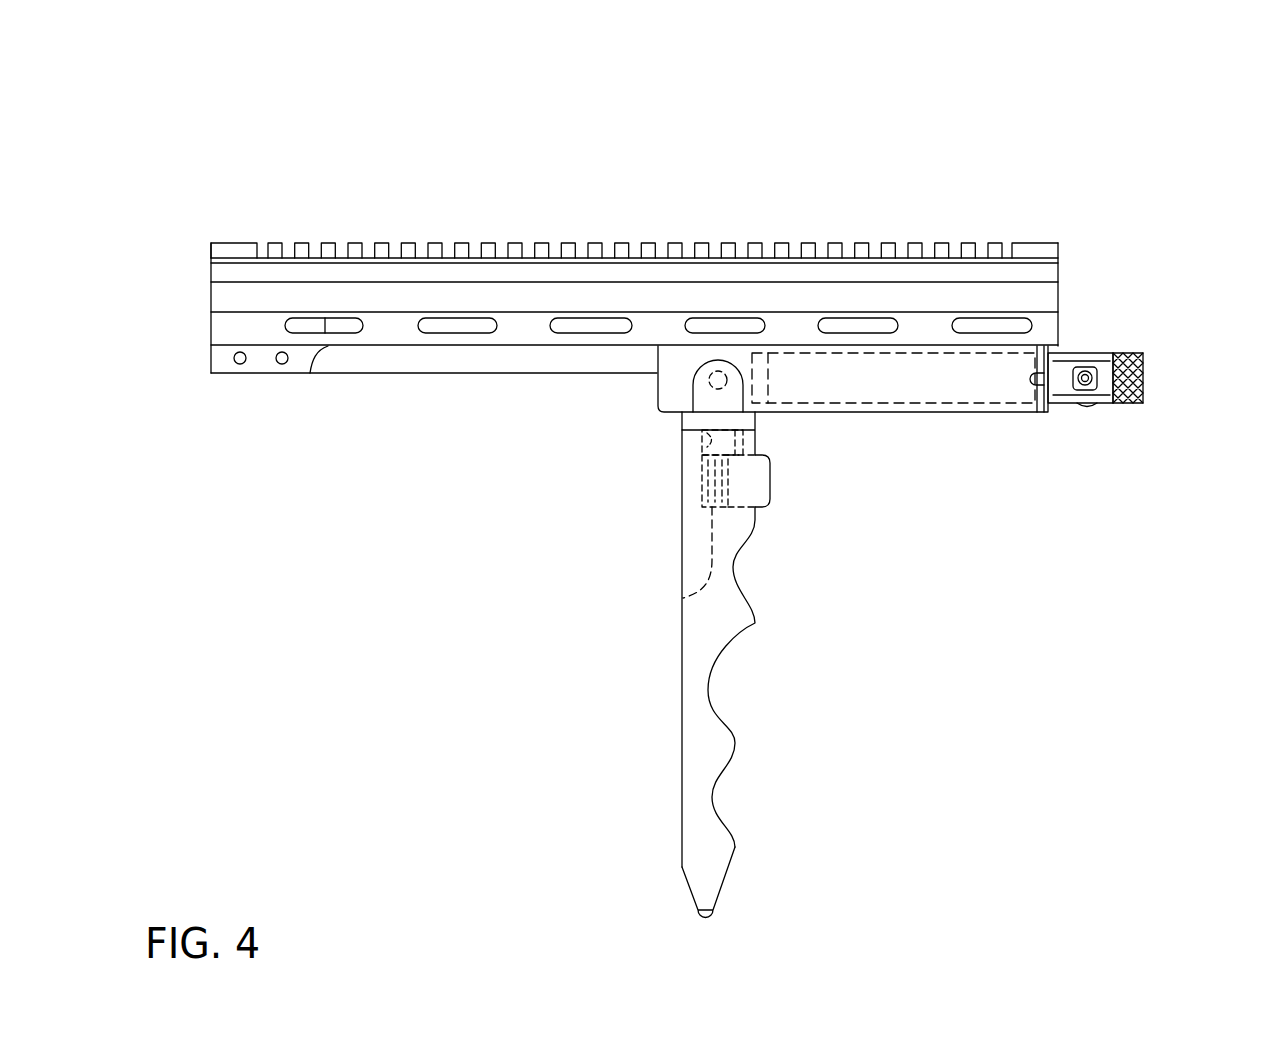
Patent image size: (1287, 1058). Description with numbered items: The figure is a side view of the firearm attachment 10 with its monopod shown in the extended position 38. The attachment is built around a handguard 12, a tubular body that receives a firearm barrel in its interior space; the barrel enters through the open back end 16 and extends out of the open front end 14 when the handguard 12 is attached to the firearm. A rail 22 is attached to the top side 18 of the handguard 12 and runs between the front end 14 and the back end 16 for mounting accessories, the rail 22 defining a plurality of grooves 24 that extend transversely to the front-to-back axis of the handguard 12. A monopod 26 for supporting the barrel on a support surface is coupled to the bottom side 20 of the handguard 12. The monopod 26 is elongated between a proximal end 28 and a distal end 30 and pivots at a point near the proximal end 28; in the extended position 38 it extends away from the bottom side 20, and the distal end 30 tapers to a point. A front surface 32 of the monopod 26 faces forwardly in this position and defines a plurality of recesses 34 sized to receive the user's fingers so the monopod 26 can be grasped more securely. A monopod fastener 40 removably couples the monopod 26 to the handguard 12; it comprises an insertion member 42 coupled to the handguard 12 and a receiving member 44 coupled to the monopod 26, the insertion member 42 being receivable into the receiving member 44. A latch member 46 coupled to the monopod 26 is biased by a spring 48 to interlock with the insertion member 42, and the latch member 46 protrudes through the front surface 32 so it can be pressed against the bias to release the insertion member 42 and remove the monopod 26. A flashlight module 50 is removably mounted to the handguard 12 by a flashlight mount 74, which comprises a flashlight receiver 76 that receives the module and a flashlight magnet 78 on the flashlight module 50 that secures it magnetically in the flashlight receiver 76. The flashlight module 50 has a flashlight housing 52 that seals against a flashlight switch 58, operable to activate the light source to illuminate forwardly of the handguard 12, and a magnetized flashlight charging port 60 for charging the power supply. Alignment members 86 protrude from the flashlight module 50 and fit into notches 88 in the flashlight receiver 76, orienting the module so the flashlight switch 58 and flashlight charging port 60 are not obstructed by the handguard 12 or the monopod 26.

The firearm attachment 10 is at (920, 150).
The handguard 12 is at (585, 287).
The front end 14 is at (1062, 282).
The back end 16 is at (211, 302).
The top side 18 is at (370, 258).
The bottom side 20 is at (452, 373).
The rail 22 is at (1032, 243).
The grooves 24 is at (447, 232).
The monopod 26 is at (690, 767).
The proximal end 28 is at (693, 445).
The distal end 30 is at (698, 872).
The front surface 32 is at (755, 627).
The recesses 34 is at (755, 572).
The extended position 38 is at (648, 690).
The monopod fastener 40 is at (782, 462).
The insertion member 42 is at (713, 443).
The receiving member 44 is at (693, 488).
The latch member 46 is at (770, 480).
The spring 48 is at (683, 598).
The flashlight module 50 is at (1125, 423).
The flashlight housing 52 is at (1130, 362).
The flashlight switch 58 is at (1097, 388).
The flashlight charging port 60 is at (1085, 412).
The flashlight mount 74 is at (1020, 425).
The flashlight receiver 76 is at (667, 393).
The flashlight magnet 78 is at (746, 373).
The alignment members 86 is at (1040, 352).
The notches 88 is at (1018, 378).